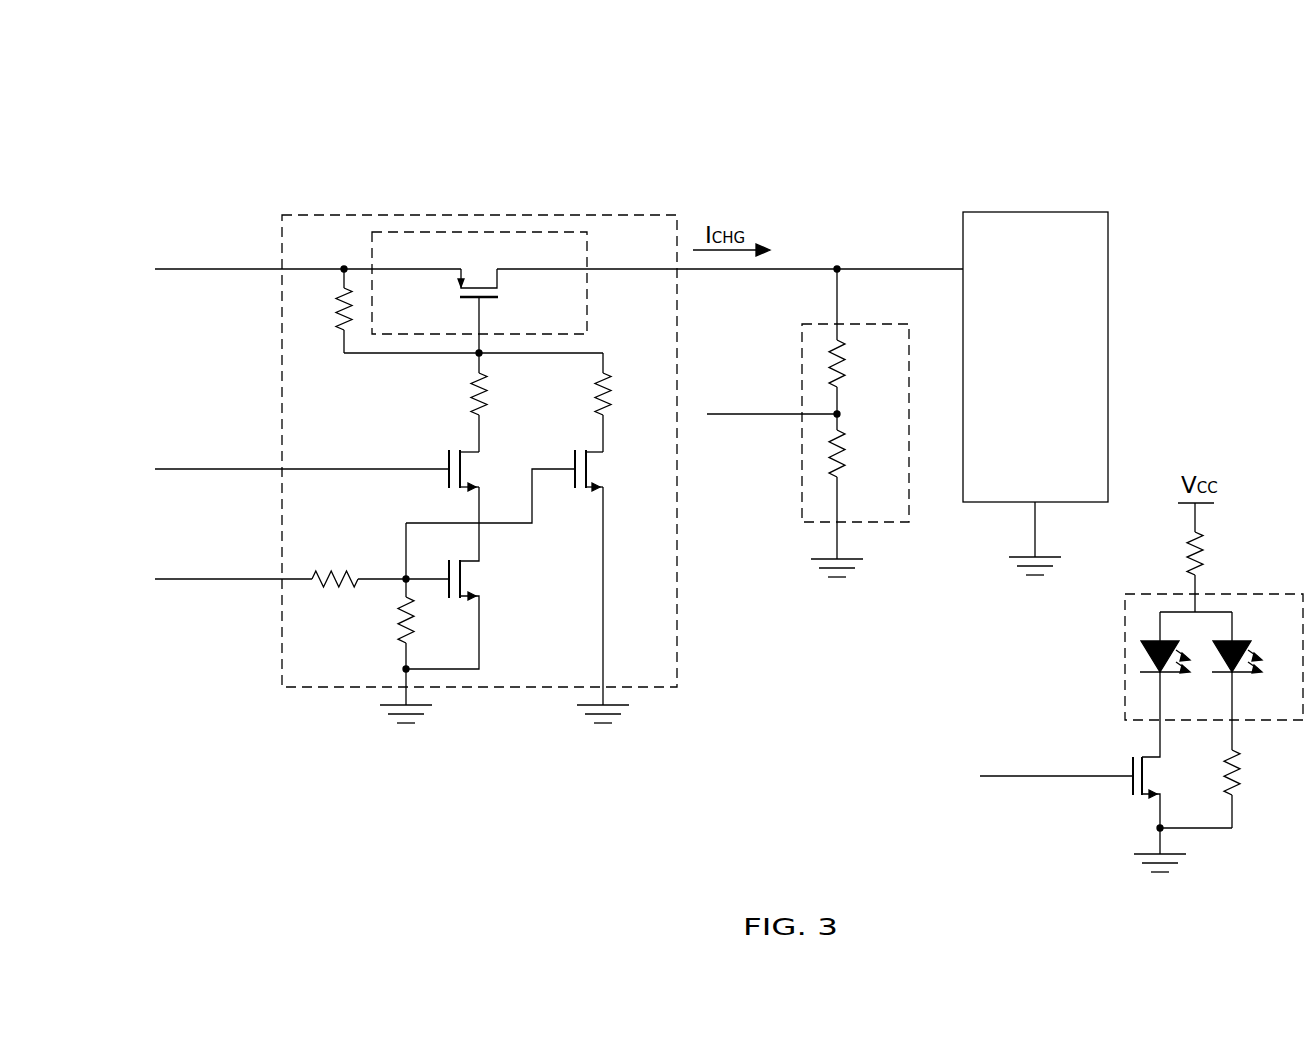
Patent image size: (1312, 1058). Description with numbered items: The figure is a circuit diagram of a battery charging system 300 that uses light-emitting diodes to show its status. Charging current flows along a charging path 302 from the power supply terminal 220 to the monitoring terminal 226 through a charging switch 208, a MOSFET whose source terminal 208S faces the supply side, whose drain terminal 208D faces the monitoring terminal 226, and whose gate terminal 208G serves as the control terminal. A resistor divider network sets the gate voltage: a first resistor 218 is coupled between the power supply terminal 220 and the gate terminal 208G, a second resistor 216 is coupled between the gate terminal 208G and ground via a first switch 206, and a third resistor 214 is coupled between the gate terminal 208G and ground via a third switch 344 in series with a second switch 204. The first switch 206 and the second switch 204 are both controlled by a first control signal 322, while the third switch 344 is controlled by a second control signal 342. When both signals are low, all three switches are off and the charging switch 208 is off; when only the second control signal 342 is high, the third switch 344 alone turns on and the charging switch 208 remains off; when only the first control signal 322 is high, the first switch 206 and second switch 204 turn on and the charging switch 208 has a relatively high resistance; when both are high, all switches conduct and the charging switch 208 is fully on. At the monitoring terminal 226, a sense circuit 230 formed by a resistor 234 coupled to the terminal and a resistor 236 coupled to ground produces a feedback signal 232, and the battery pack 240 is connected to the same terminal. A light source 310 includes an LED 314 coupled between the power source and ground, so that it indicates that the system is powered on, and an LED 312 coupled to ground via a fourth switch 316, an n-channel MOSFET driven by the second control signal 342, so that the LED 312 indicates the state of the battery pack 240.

The battery charging system 300 is at (215, 136).
The charging path 302 is at (568, 214).
The power supply terminal 220 is at (210, 268).
The monitoring terminal 226 is at (835, 268).
The first resistor 218 is at (340, 328).
The charging switch 208 is at (588, 296).
The source terminal 208S is at (450, 267).
The drain terminal 208D is at (532, 267).
The gate terminal 208G is at (490, 300).
The third resistor 214 is at (488, 381).
The second resistor 216 is at (612, 381).
The third switch 344 is at (448, 460).
The first switch 206 is at (575, 460).
The second switch 204 is at (450, 570).
The second control signal 342 is at (210, 469).
The first control signal 322 is at (210, 579).
The sense circuit 230 is at (801, 347).
The feedback signal 232 is at (770, 396).
The resistor 234 is at (847, 365).
The resistor 236 is at (847, 455).
The battery pack 240 is at (1016, 405).
The light source 310 is at (1123, 654).
The LED 312 is at (1168, 676).
The LED 314 is at (1240, 676).
The fourth switch 316 is at (1130, 768).